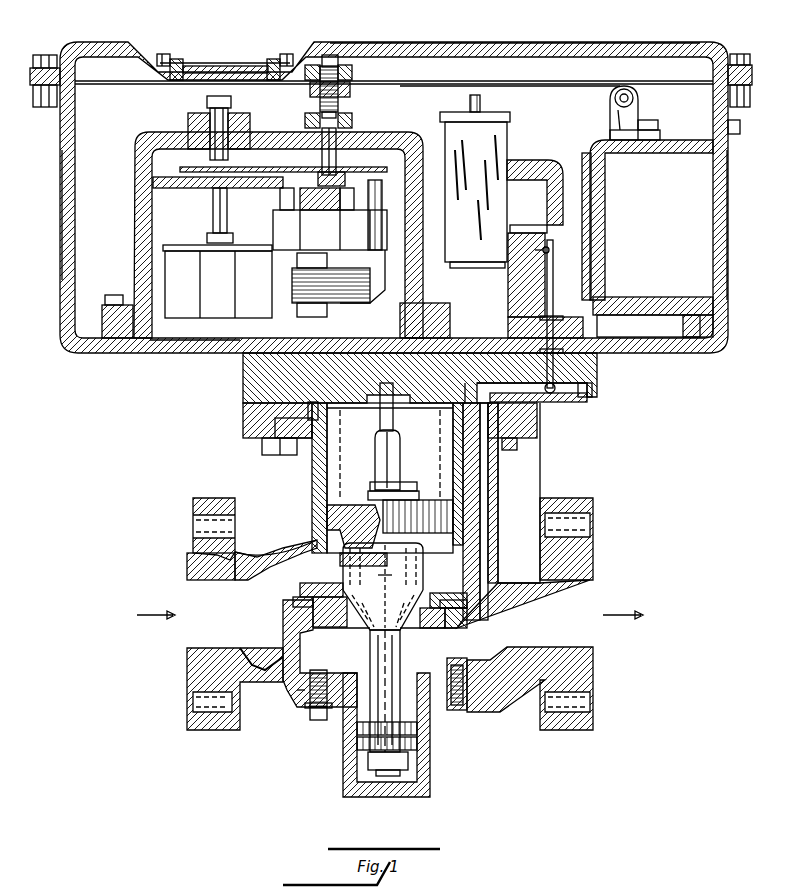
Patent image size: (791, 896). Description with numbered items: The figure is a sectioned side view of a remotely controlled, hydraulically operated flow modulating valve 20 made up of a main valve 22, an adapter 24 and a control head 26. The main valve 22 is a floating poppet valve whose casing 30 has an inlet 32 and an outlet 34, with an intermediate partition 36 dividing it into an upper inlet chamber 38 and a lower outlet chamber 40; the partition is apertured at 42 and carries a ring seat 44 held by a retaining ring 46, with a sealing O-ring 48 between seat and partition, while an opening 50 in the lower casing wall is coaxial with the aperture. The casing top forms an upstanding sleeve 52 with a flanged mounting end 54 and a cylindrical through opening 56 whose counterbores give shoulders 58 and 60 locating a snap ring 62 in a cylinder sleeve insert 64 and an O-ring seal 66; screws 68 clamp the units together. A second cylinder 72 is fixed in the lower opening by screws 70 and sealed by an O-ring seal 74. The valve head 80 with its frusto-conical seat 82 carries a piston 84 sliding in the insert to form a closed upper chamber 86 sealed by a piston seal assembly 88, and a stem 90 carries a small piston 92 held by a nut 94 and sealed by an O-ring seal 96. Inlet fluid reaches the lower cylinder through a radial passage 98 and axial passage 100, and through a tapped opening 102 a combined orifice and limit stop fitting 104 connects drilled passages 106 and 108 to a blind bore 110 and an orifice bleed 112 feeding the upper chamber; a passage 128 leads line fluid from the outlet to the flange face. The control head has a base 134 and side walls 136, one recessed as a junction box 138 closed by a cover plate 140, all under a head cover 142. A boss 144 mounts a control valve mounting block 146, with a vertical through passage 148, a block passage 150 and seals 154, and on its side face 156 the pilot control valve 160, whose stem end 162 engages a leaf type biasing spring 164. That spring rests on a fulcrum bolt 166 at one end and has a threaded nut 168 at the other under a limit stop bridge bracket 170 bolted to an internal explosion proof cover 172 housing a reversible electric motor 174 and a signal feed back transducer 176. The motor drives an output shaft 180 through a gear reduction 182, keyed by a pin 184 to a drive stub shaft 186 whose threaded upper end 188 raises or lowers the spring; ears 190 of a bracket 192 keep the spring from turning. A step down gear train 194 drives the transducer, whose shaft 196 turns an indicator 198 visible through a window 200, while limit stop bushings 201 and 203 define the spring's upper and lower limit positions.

The flow modulating valve 20 is at (155, 448).
The main valve 22 is at (250, 525).
The adapter 24 is at (243, 376).
The control head 26 is at (62, 318).
The casing 30 is at (275, 668).
The inlet 32 is at (187, 646).
The outlet 34 is at (593, 642).
The intermediate partition 36 is at (315, 632).
The upper inlet chamber 38 is at (300, 545).
The lower outlet chamber 40 is at (289, 692).
The partition aperture 42 is at (430, 628).
The ring seat 44 is at (318, 590).
The retaining ring 46 is at (293, 601).
The sealing O-ring 48 is at (460, 628).
The opening 50 is at (450, 678).
The upstanding sleeve 52 is at (312, 475).
The flanged mounting end 54 is at (243, 426).
The cylindrical through opening 56 is at (330, 456).
The seating shoulder 58 is at (293, 428).
The seating shoulder 60 is at (311, 399).
The snap ring 62 is at (453, 420).
The cylinder sleeve insert 64 is at (472, 467).
The O-ring seal 66 is at (468, 396).
The screws 68 is at (262, 448).
The screws 70 is at (312, 720).
The second cylinder 72 is at (343, 756).
The O-ring seal 74 is at (321, 720).
The valve head 80 is at (470, 565).
The frusto-conical seat 82 is at (470, 587).
The piston 84 is at (484, 512).
The upper chamber 86 is at (494, 490).
The piston seal assembly 88 is at (327, 516).
The stem 90 is at (370, 665).
The small piston 92 is at (420, 728).
The nut 94 is at (408, 760).
The O-ring seal 96 is at (420, 745).
The radial passage 98 is at (395, 576).
The axial passage 100 is at (383, 586).
The tapped opening 102 is at (366, 496).
The combined orifice and head limit stop fitting 104 is at (388, 398).
The drilled passage 106 is at (353, 526).
The drilled passage 108 is at (340, 560).
The blind bore 110 is at (398, 471).
The orifice bleed 112 is at (372, 484).
The passage 128 is at (498, 560).
The base 134 is at (150, 346).
The side walls 136 is at (62, 212).
The electrical junction box 138 is at (672, 158).
The cover plate 140 is at (730, 236).
The head cover 142 is at (495, 43).
The boss 144 is at (508, 330).
The control valve mounting block 146 is at (508, 280).
The vertical through passage 148 is at (548, 338).
The passage 150 is at (527, 253).
The seals 154 is at (548, 318).
The side face 156 is at (515, 185).
The control valve 160 is at (447, 172).
The valve spool stem end 162 is at (470, 100).
The leaf type biasing spring 164 is at (520, 84).
The fulcrum bolt 166 is at (634, 98).
The threaded nut 168 is at (338, 108).
The limit stop bridge bracket 170 is at (352, 74).
The internal explosion proof cover 172 is at (136, 146).
The reversible electric motor 174 is at (335, 305).
The signal feed back transducer 176 is at (220, 308).
The output shaft 180 is at (295, 244).
The gear reduction 182 is at (318, 244).
The pin 184 is at (340, 180).
The drive stub shaft 186 is at (336, 157).
The threaded upper end 188 is at (310, 92).
The ears 190 is at (610, 112).
The bracket 192 is at (610, 135).
The step down gear train 194 is at (266, 190).
The transducer shaft 196 is at (213, 217).
The indicator 198 is at (210, 101).
The window 200 is at (238, 65).
The limit stop bushing 201 is at (336, 56).
The limit stop bushing 203 is at (312, 118).